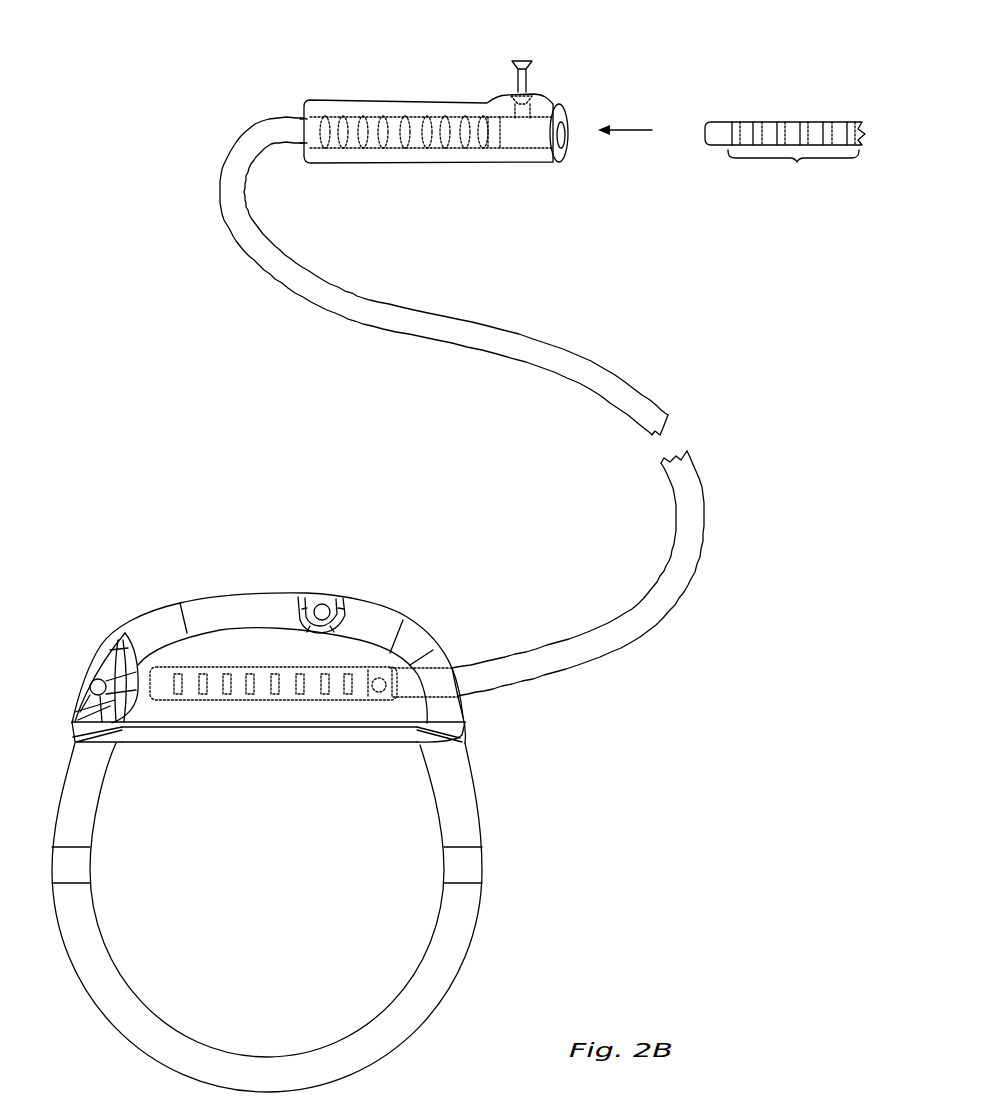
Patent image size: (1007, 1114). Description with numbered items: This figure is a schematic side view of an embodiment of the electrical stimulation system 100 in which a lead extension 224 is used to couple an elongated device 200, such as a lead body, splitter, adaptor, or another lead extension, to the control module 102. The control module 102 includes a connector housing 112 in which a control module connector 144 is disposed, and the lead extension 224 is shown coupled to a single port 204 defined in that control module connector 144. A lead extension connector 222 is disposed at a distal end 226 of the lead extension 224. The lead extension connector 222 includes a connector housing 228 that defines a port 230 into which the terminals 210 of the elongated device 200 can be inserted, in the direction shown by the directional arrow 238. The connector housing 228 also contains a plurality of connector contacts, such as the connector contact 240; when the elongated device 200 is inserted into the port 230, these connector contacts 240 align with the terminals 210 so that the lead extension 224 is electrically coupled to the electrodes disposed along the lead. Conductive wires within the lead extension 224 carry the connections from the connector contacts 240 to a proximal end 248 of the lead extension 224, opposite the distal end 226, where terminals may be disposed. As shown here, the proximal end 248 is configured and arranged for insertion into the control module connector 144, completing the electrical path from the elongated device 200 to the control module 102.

The electrical stimulation system 100 is at (664, 330).
The control module 102 is at (542, 869).
The connector housing 112 is at (302, 634).
The control module connector 144 is at (357, 667).
The elongated device 200 is at (785, 99).
The port 204 is at (460, 697).
The terminals 210 is at (793, 154).
The lead extension connector 222 is at (398, 101).
The lead extension 224 is at (548, 343).
The distal end 226 is at (300, 90).
The connector housing 228 is at (348, 108).
The port 230 is at (584, 152).
The directional arrow 238 is at (637, 128).
The connector contact 240 is at (447, 150).
The proximal end 248 is at (470, 640).